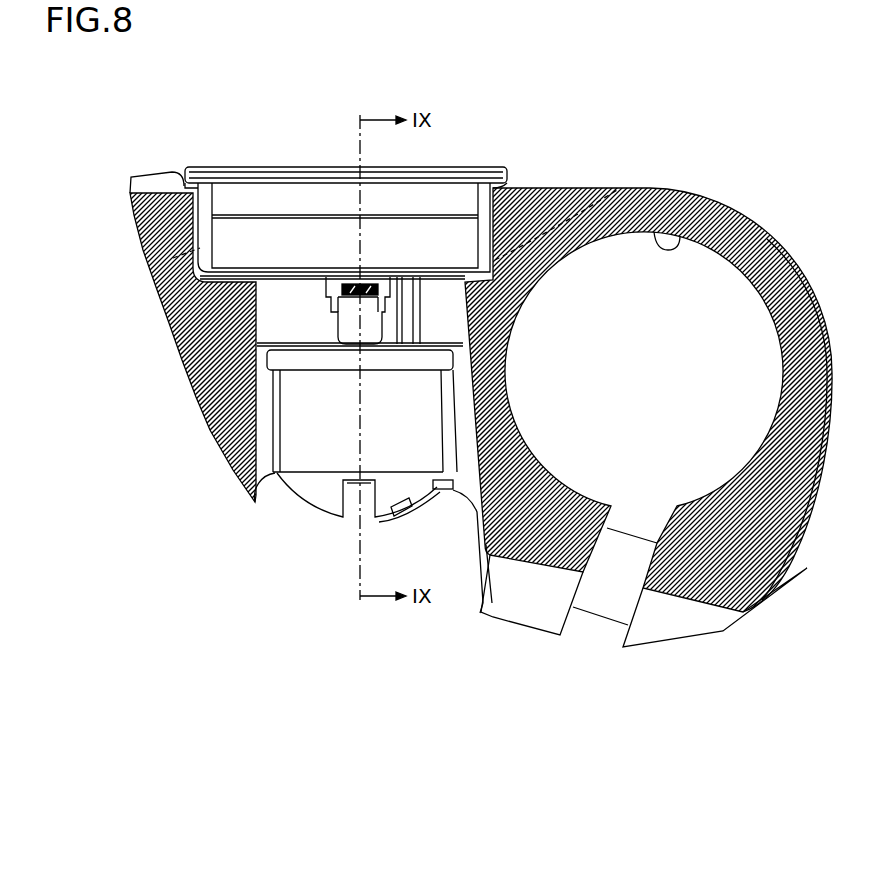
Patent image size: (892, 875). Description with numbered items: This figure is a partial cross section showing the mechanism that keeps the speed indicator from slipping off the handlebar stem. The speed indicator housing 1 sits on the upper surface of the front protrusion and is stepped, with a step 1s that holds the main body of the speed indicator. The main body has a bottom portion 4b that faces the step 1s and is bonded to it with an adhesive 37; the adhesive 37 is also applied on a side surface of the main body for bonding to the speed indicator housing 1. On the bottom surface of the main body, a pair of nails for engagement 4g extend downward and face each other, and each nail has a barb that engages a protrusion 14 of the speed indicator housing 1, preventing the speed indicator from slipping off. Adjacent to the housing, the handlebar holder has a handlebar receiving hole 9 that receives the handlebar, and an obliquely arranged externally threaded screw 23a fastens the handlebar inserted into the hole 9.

The speed indicator housing 1 is at (150, 278).
The step 1s is at (470, 283).
The bottom portion 4b is at (530, 190).
The nails for engagement 4g is at (325, 299).
The handlebar receiving hole 9 is at (683, 237).
The protrusion 14 is at (352, 305).
The screw 23a is at (607, 597).
The adhesive 37 is at (172, 340).